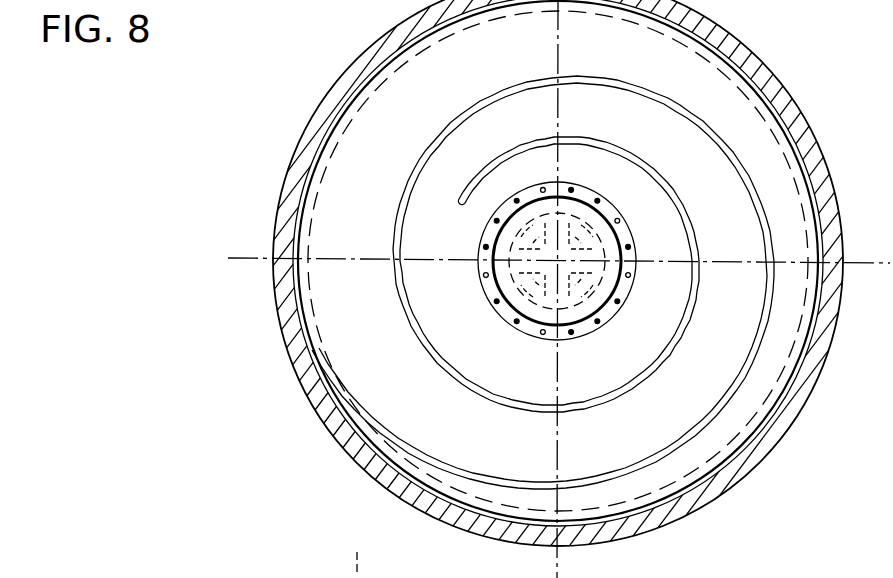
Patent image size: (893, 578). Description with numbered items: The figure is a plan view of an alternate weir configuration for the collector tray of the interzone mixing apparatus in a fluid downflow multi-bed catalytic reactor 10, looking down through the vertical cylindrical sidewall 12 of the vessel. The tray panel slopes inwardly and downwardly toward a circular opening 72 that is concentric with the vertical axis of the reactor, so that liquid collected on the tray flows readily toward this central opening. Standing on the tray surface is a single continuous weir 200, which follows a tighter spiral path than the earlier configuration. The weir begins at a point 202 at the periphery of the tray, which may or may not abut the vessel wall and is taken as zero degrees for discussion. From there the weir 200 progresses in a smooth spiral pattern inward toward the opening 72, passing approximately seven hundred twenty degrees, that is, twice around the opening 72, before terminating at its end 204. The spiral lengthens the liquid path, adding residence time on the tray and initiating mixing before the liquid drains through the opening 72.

The fluid downflow multi-bed catalytic reactor 10 is at (322, 78).
The vertical cylindrical sidewall 12 is at (306, 392).
The circular opening 72 is at (596, 258).
The single continuous weir 200 is at (501, 89).
The starting point of weir 202 is at (340, 131).
The end of weir 204 is at (462, 200).